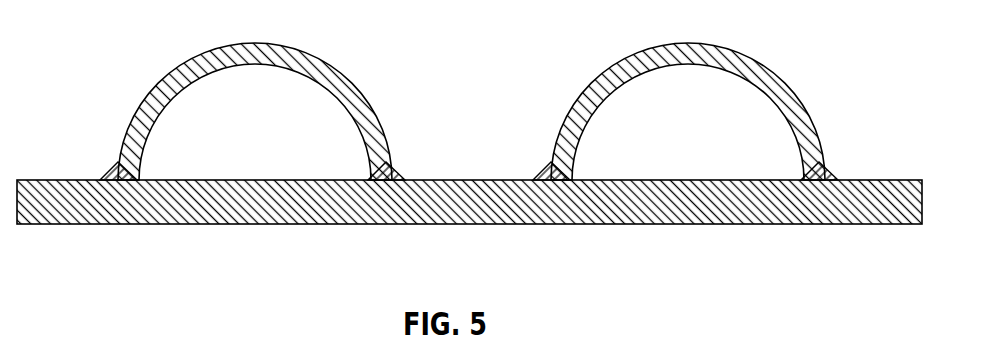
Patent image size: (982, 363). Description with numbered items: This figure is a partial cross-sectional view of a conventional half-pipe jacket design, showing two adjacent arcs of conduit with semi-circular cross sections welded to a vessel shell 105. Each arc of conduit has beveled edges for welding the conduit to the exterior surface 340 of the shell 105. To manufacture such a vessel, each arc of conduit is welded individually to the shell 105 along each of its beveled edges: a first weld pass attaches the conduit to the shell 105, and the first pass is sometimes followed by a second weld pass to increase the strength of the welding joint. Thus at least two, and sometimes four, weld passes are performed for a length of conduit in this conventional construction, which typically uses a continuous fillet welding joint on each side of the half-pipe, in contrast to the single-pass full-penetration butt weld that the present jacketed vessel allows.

The shell 105 is at (238, 225).
The exterior surface 340 is at (879, 170).